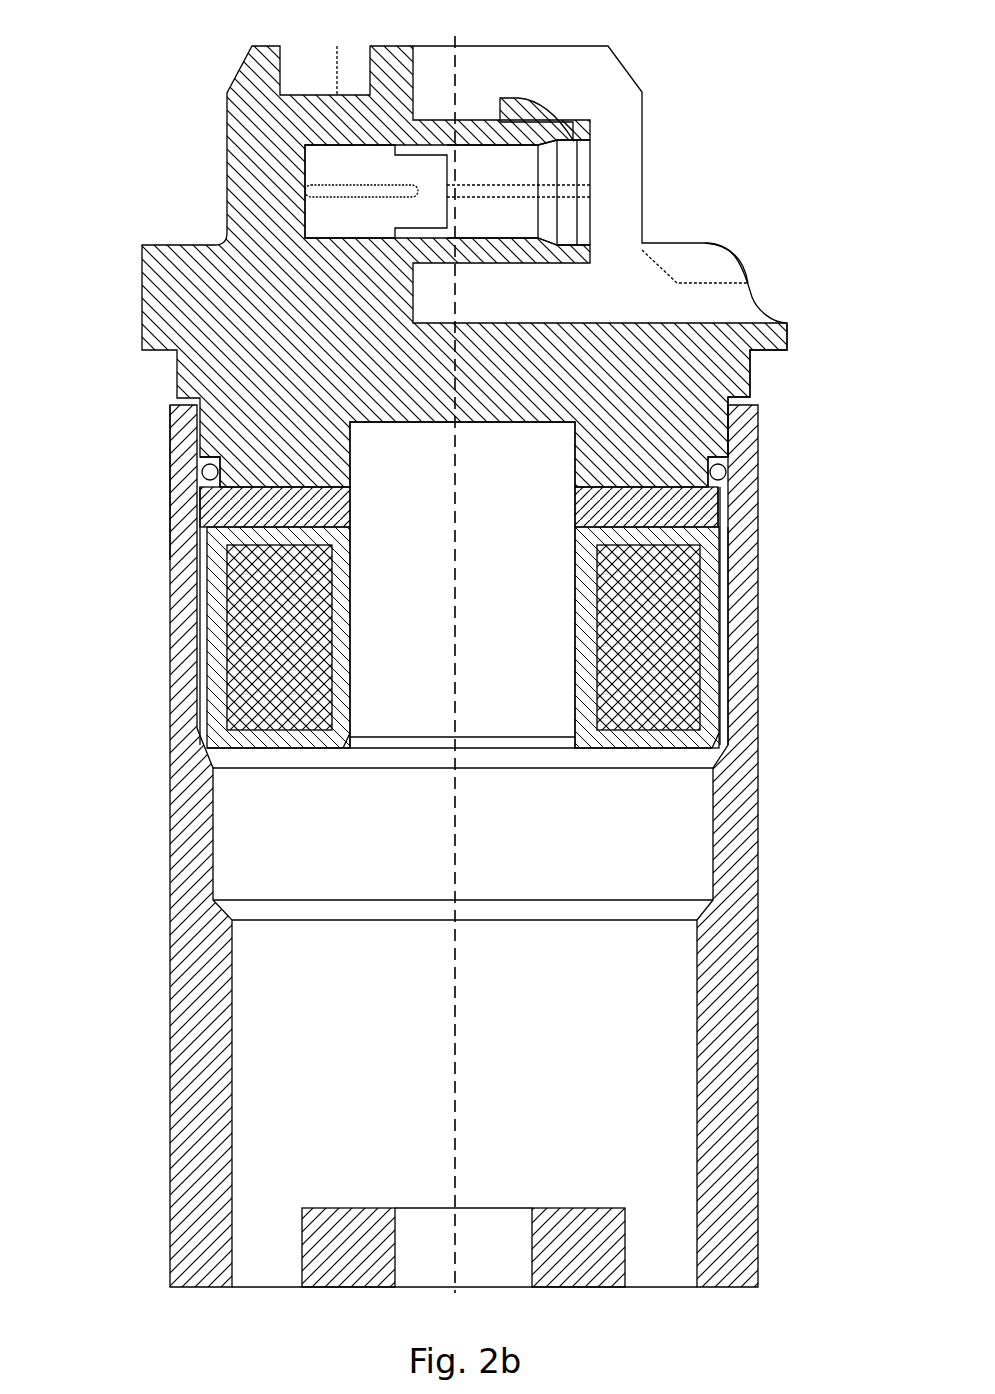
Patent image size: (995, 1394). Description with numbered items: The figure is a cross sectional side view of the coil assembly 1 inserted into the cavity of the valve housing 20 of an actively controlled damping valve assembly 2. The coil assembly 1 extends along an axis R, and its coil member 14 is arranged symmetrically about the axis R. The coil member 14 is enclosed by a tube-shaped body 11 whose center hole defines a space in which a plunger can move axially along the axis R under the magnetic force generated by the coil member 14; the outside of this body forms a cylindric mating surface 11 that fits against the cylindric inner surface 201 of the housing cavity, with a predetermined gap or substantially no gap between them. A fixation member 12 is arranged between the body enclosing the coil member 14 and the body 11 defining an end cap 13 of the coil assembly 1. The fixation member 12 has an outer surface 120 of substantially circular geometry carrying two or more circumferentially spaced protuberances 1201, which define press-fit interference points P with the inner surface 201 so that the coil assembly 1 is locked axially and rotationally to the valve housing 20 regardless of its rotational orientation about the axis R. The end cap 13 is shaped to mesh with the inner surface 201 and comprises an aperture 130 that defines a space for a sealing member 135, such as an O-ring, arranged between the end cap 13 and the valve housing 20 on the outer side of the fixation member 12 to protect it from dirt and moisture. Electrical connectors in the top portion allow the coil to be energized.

The coil assembly 1 is at (706, 183).
The damping valve assembly 2 is at (476, 846).
The mating surface 11 is at (722, 680).
The fixation member 12 is at (353, 506).
The end cap 13 is at (756, 381).
The coil member 14 is at (237, 627).
The valve housing 20 is at (767, 858).
The outer surface 120 is at (721, 500).
The aperture 130 is at (720, 458).
The sealing member 135 is at (722, 474).
The inner surface 201 is at (727, 710).
The protuberances 1201 is at (197, 503).
The press-fit interference points P is at (160, 492).
The axis R is at (454, 649).